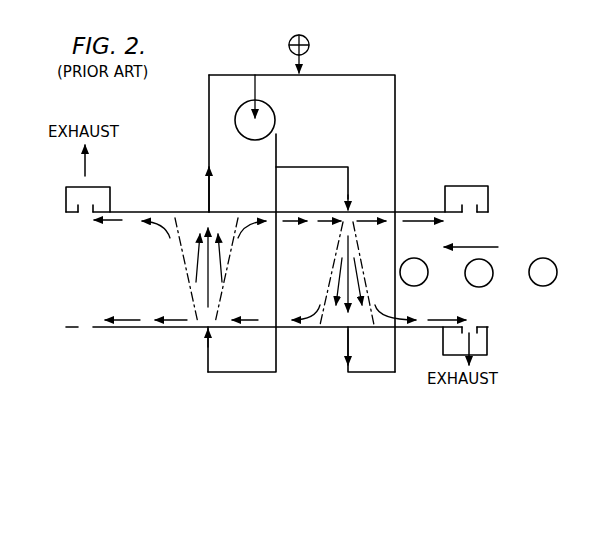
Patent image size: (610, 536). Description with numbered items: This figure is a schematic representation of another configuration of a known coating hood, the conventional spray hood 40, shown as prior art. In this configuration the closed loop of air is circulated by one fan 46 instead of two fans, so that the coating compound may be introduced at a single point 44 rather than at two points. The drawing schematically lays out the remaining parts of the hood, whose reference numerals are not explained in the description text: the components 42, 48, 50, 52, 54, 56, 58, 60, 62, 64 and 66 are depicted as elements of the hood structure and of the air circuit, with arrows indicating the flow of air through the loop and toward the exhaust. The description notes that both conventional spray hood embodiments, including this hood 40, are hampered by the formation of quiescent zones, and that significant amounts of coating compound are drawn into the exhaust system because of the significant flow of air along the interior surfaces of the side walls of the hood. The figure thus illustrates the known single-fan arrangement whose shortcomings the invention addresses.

The spray hood 40 is at (407, 184).
The substrates 42 is at (426, 281).
The point 44 is at (309, 45).
The fan 46 is at (258, 118).
The gas feed line 48 is at (254, 135).
The partition wall 50 is at (279, 136).
The gas nozzle 52 is at (353, 208).
The gas outlet 54 is at (352, 330).
The housing 56 is at (397, 117).
The gas inlet nozzle 58 is at (205, 340).
The gas outlet 60 is at (211, 205).
The processing chamber 62 is at (280, 271).
The exhaust duct 64 is at (488, 344).
The exhaust duct 66 is at (112, 196).